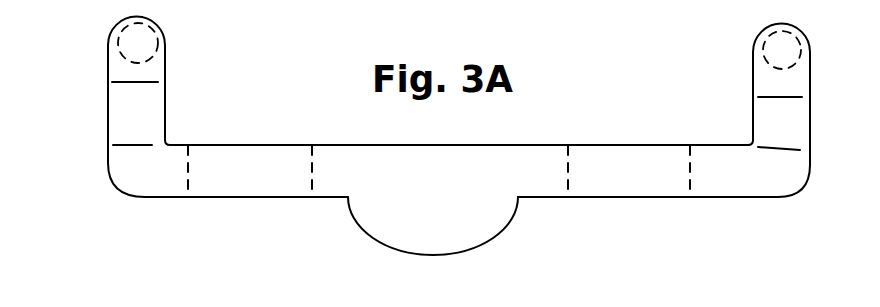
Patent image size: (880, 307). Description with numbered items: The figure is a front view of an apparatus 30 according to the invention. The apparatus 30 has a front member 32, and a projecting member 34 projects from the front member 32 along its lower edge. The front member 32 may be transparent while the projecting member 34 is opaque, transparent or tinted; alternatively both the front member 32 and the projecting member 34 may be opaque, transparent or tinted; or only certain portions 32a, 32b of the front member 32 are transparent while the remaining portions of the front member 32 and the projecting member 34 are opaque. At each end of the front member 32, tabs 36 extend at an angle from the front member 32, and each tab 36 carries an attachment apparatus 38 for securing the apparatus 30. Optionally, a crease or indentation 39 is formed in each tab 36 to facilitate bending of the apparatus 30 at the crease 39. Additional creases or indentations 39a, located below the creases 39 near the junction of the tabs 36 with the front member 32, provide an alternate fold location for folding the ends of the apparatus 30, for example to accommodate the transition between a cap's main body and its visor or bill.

The apparatus 30 is at (413, 142).
The front member 32 is at (459, 169).
The portion of front member 32a is at (250, 149).
The portion of front member 32b is at (629, 153).
The projecting member 34 is at (378, 232).
The tab 36 is at (140, 98).
The attachment apparatus 38 is at (150, 33).
The crease or indentation 39 is at (138, 84).
The crease or indentation 39a is at (133, 140).